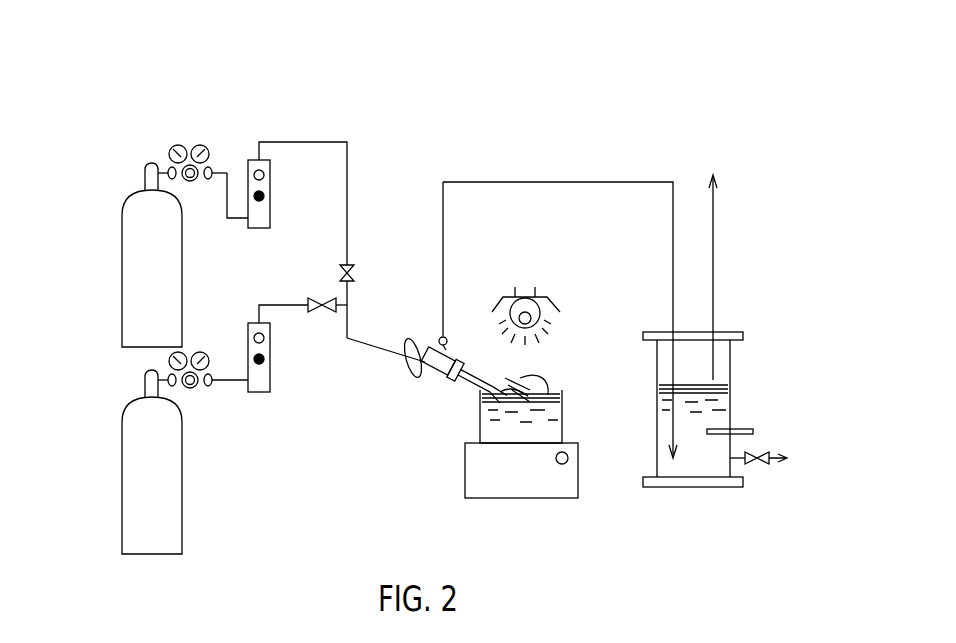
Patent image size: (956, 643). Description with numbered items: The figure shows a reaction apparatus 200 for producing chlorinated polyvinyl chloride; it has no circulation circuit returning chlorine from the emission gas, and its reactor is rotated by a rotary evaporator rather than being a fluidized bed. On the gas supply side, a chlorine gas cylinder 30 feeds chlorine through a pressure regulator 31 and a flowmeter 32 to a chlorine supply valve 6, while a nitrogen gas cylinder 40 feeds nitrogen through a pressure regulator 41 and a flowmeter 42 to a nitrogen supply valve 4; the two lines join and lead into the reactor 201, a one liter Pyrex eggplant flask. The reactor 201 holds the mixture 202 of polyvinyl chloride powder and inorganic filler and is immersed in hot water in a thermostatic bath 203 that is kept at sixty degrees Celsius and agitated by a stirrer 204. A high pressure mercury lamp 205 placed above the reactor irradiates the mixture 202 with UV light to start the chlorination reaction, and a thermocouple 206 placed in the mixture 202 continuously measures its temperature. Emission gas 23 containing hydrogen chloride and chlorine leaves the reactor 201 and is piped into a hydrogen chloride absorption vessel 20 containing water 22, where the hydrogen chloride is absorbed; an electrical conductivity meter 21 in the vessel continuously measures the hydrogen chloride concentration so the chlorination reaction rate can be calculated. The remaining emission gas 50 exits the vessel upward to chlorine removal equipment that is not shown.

The reaction apparatus 200 is at (258, 77).
The chlorine gas cylinder 30 is at (182, 273).
The pressure regulator 31 is at (184, 145).
The flowmeter 32 is at (270, 185).
The nitrogen gas cylinder 40 is at (182, 480).
The pressure regulator 41 is at (200, 352).
The flowmeter 42 is at (270, 375).
The chlorine supply valve 6 is at (340, 273).
The nitrogen supply valve 4 is at (320, 312).
The reactor 201 is at (535, 362).
The mixture of polyvinyl chloride powder and inorganic filler 202 is at (562, 410).
The thermostatic bath 203 is at (478, 432).
The stirrer 204 is at (549, 485).
The high pressure mercury lamp 205 is at (565, 300).
The thermocouple 206 is at (478, 402).
The emission gas 50 is at (713, 272).
The hydrogen chloride absorption vessel 20 is at (693, 487).
The electrical conductivity meter 21 is at (753, 432).
The water 22 is at (730, 400).
The emission gas 23 is at (668, 366).